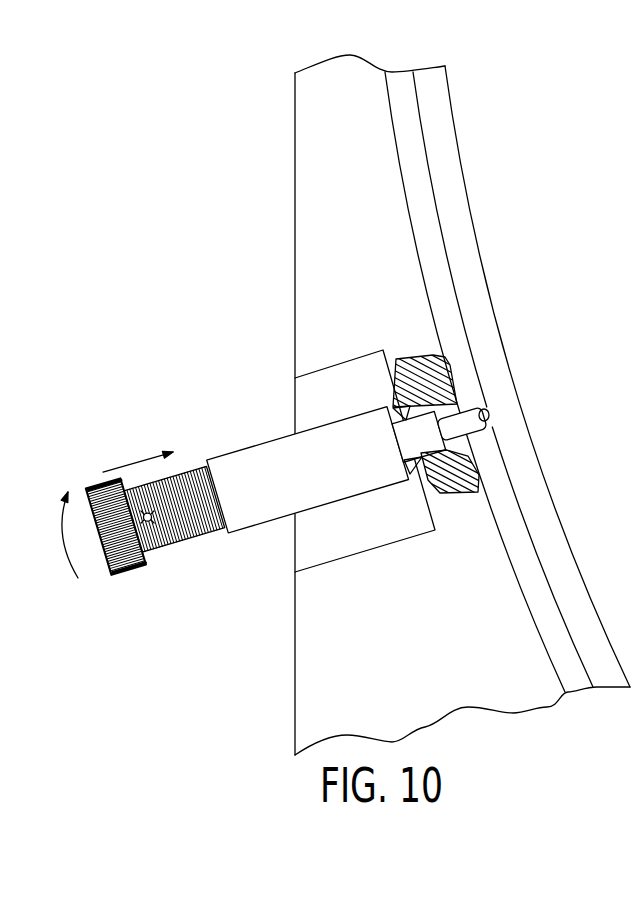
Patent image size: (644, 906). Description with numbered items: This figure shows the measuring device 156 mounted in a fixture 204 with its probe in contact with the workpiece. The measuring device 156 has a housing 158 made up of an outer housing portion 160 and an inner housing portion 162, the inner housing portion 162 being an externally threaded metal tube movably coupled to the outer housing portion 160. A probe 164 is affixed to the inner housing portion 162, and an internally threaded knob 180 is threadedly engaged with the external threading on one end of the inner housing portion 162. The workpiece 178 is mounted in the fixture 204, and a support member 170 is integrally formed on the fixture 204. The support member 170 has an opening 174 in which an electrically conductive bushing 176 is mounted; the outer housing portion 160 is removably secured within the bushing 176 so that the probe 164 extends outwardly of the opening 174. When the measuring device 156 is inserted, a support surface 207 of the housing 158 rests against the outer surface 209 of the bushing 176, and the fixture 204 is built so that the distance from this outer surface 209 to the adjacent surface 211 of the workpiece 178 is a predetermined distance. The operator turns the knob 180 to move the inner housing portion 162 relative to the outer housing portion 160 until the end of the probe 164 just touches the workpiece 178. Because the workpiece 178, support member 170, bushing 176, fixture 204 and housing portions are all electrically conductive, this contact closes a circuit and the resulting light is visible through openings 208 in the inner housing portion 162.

The measuring device 156 is at (133, 397).
The housing 158 is at (247, 565).
The outer housing portion 160 is at (317, 495).
The inner housing portion 162 is at (187, 487).
The probe 164 is at (488, 419).
The support member 170 is at (447, 373).
The opening 174 is at (466, 452).
The bushing 176 is at (430, 532).
The workpiece 178 is at (580, 611).
The knob 180 is at (110, 575).
The fixture 204 is at (307, 173).
The support surface 207 is at (393, 420).
The openings 208 is at (152, 528).
The outer surface 209 is at (400, 472).
The adjacent surface 211 is at (486, 414).